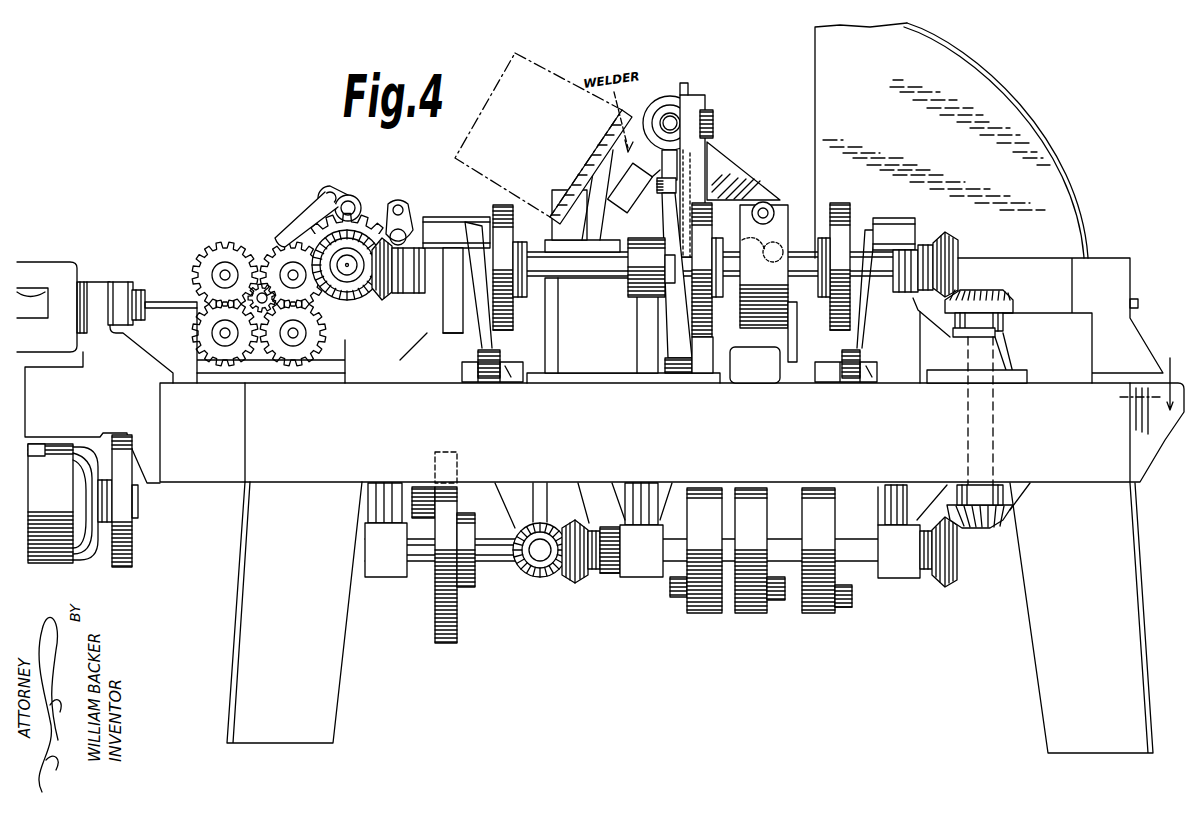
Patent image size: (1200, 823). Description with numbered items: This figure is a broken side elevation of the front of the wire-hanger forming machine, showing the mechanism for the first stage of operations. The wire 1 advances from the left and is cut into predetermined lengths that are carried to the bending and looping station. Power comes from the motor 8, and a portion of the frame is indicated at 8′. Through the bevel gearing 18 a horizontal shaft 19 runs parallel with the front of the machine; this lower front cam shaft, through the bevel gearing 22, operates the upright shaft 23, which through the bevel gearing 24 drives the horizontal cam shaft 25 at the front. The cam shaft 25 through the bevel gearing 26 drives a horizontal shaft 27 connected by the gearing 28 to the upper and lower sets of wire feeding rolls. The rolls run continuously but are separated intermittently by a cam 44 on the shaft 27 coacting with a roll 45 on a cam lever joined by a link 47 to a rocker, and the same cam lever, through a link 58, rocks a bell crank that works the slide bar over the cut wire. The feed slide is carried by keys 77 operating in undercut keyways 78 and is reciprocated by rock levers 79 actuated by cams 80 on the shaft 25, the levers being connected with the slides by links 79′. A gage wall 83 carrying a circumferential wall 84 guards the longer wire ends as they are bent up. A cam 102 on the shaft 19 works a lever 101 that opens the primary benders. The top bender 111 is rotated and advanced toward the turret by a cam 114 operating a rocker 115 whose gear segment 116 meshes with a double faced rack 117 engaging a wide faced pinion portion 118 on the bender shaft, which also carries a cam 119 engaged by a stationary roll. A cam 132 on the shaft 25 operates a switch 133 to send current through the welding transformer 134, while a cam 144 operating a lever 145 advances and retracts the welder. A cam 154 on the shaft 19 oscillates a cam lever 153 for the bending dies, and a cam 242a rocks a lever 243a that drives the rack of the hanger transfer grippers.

The wire 1 is at (180, 306).
The motor 8 is at (32, 368).
The frame portion 8′ is at (1146, 385).
The bevel gearing 18 is at (567, 580).
The horizontal shaft 19 is at (505, 556).
The bevel gearing 22 is at (960, 528).
The upright shaft 23 is at (993, 436).
The bevel gearing 24 is at (962, 294).
The horizontal cam shaft 25 is at (592, 275).
The bevel gearing 26 is at (362, 292).
The horizontal shaft 27 is at (346, 276).
The gearing 28 is at (278, 254).
The cam 44 is at (361, 205).
The roll 45 is at (337, 193).
The link 47 is at (318, 226).
The link 58 is at (437, 214).
The keys 77 is at (502, 384).
The undercut keyways 78 is at (470, 384).
The rock levers 79 is at (481, 332).
The links 79′ is at (499, 352).
The cams 80 is at (499, 214).
The gage wall 83 is at (949, 140).
The circumferential wall 84 is at (1033, 134).
The lever 101 is at (780, 601).
The cam 102 is at (745, 614).
The top bender 111 is at (690, 92).
The cam 114 is at (787, 220).
The rocker 115 is at (757, 202).
The gear segment 116 is at (708, 196).
The double faced rack 117 is at (712, 166).
The wide faced pinion portion 118 is at (645, 170).
The cam 119 is at (667, 98).
The cam 132 is at (796, 334).
The switch 133 is at (756, 378).
The welding transformer 134 is at (478, 138).
The cam 144 is at (708, 320).
The lever 145 is at (678, 304).
The cam lever 153 is at (423, 486).
The cam 154 is at (435, 617).
The cam 242a is at (822, 614).
The lever 243a is at (853, 597).